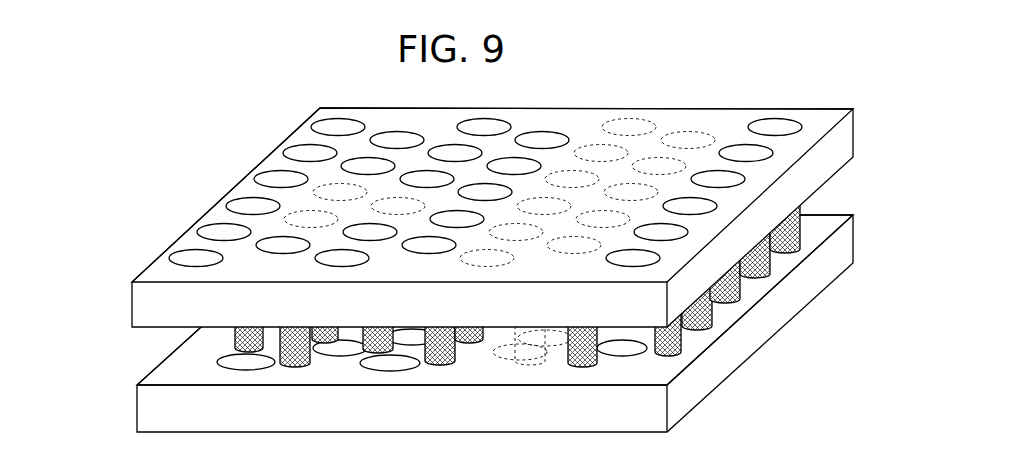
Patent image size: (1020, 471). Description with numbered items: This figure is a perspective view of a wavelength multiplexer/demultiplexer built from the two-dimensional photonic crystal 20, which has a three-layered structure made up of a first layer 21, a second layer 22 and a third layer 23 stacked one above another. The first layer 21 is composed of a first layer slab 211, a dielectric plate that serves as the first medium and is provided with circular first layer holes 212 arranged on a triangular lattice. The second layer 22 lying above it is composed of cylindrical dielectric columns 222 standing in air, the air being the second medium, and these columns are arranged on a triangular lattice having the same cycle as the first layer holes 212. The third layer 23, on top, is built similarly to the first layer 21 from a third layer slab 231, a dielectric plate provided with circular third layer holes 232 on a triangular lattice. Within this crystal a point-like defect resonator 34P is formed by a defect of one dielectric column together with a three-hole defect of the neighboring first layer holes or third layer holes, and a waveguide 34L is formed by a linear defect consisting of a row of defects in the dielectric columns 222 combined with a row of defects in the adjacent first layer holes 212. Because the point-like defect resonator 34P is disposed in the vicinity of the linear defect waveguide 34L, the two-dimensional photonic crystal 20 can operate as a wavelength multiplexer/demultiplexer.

The two-dimensional photonic crystal 20 is at (487, 261).
The first layer 21 is at (487, 323).
The first layer slab 211 is at (753, 318).
The first layer holes 212 is at (640, 360).
The second layer 22 is at (487, 258).
The dielectric columns 222 is at (770, 262).
The third layer 23 is at (462, 202).
The third layer slab 231 is at (203, 217).
The third layer holes 232 is at (198, 258).
The point-like defect resonator 34P is at (318, 186).
The waveguide 34L is at (650, 140).